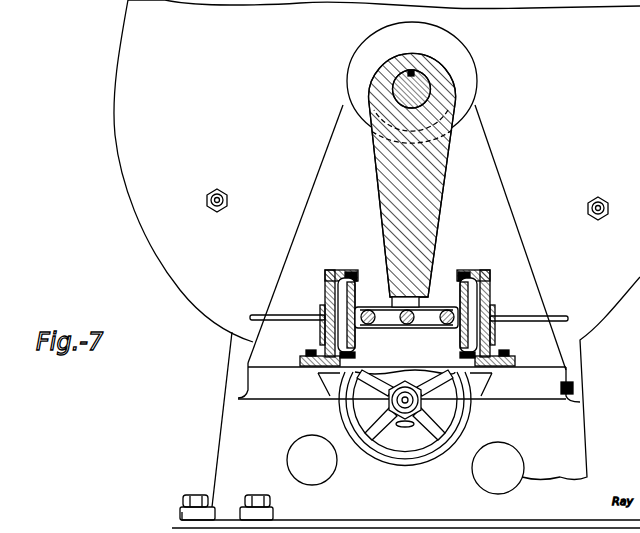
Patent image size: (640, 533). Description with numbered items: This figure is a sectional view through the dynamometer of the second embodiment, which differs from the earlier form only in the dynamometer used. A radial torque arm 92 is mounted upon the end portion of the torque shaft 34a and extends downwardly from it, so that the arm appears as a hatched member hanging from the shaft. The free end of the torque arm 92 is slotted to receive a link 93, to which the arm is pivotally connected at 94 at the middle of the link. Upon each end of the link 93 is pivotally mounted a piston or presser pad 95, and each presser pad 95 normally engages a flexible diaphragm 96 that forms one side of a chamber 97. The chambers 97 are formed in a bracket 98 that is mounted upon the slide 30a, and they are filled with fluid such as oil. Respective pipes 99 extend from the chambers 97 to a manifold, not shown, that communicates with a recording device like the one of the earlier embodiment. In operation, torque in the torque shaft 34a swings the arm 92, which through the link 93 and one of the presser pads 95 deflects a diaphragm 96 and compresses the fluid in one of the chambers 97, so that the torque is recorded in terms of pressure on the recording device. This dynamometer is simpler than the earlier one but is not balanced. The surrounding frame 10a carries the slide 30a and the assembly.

The torque shaft 34a is at (428, 92).
The radial torque arm 92 is at (432, 195).
The link 93 is at (429, 307).
The pivot connection 94 is at (401, 312).
The piston or presser pad 95 is at (360, 330).
The flexible diaphragm 96 is at (357, 350).
The chamber 97 is at (327, 297).
The bracket 98 is at (322, 327).
The pipe 99 is at (255, 315).
The slide 30a is at (560, 382).
The frame 10a is at (580, 440).